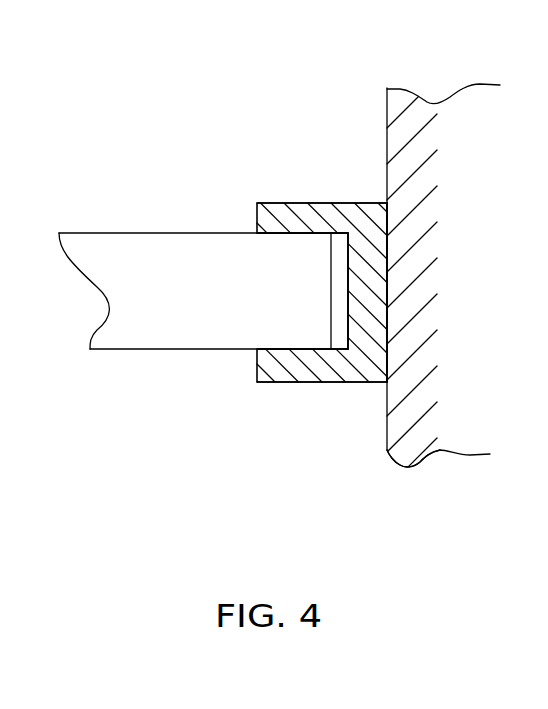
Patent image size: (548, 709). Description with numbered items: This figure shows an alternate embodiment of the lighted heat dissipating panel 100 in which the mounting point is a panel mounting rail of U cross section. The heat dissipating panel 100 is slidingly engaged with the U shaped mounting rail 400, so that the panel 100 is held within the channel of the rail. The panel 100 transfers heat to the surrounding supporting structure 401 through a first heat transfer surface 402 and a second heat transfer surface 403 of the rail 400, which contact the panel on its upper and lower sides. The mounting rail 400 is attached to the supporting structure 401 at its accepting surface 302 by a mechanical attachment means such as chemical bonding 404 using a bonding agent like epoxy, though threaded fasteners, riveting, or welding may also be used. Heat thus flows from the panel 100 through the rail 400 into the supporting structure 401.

The heat dissipating panel 100 is at (183, 350).
The accepting surface 302 is at (384, 117).
The U shaped mounting rail 400 is at (335, 382).
The supporting structure 401 is at (421, 467).
The first heat transfer surface 402 is at (283, 347).
The second heat transfer surface 403 is at (305, 233).
The chemical bonding 404 is at (386, 201).